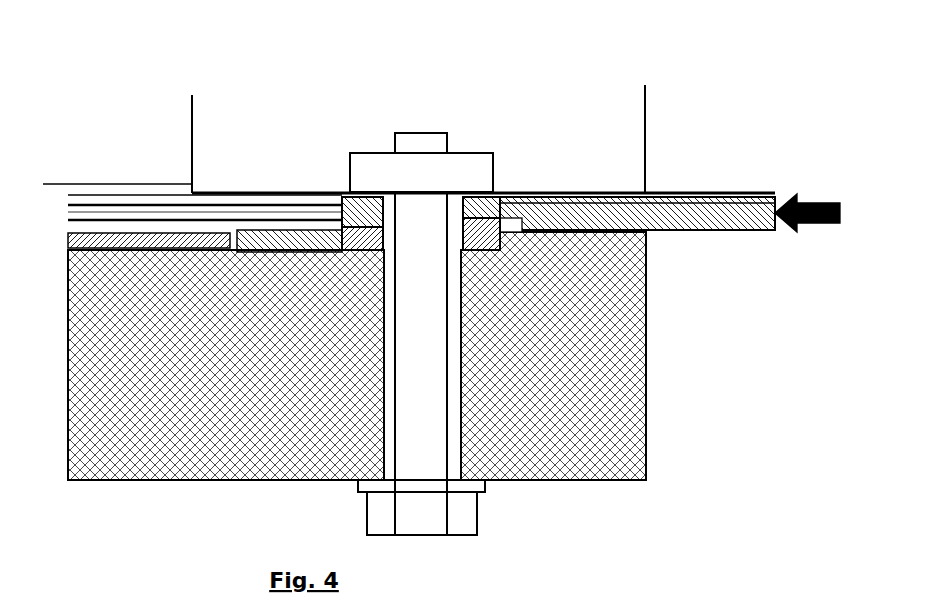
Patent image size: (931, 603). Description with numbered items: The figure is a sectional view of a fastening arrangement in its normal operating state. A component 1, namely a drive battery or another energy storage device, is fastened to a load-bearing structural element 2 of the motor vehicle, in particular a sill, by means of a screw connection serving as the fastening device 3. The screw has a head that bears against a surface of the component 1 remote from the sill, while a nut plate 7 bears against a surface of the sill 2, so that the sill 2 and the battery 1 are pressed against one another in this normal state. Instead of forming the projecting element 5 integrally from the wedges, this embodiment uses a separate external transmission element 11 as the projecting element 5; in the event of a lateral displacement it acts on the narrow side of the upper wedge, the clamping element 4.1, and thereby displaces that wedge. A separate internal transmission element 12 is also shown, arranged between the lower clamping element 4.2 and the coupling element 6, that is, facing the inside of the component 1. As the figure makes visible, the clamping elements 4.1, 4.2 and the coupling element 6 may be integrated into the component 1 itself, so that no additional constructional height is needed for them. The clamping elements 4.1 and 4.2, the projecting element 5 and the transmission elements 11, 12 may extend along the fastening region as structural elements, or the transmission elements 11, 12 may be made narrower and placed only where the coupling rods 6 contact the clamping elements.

The component 1 is at (562, 357).
The load-bearing structural element 2 is at (195, 117).
The fastening device 3 is at (413, 460).
The clamping element, upper wedge 4.1 is at (510, 195).
The clamping element, lower wedge 4.2 is at (503, 240).
The projecting element 5 is at (708, 180).
The coupling element 6 is at (122, 198).
The nut plate 7 is at (475, 167).
The external transmission element 11 is at (740, 208).
The internal transmission element 12 is at (278, 243).